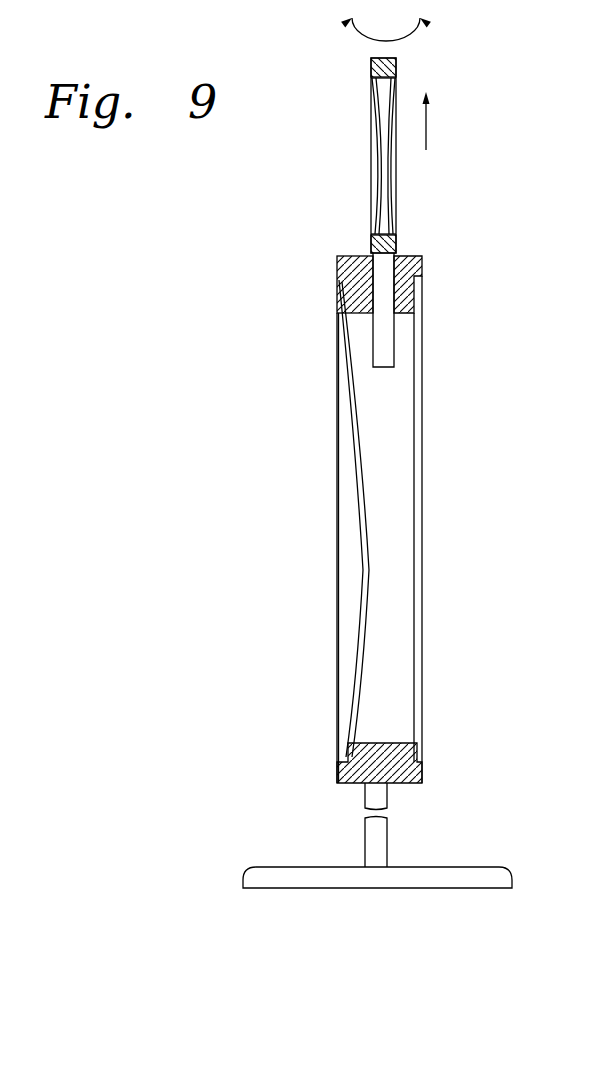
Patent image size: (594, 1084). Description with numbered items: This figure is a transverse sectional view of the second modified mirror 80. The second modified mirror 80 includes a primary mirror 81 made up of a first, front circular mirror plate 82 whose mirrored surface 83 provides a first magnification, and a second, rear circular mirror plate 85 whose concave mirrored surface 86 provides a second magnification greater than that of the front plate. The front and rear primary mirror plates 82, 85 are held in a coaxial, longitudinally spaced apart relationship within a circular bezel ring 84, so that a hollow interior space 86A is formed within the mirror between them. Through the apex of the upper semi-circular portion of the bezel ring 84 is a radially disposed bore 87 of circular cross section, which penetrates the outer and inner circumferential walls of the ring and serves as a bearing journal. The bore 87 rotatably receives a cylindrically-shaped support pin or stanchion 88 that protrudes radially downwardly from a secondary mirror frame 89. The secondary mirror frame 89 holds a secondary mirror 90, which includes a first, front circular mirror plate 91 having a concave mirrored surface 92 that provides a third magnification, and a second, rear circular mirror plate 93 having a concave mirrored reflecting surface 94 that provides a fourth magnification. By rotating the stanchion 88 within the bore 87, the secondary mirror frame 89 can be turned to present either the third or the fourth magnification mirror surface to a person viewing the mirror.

The second modified mirror 80 is at (460, 335).
The primary mirror 81 is at (430, 720).
The front circular mirror plate 82 is at (420, 675).
The mirrored surface 83 is at (424, 620).
The bezel ring 84 is at (345, 258).
The rear circular mirror plate 85 is at (340, 757).
The concave mirrored surface 86 is at (350, 665).
The hollow interior space 86A is at (408, 714).
The bore 87 is at (416, 262).
The stanchion 88 is at (373, 355).
The secondary mirror frame 89 is at (372, 72).
The secondary mirror 90 is at (398, 192).
The front circular mirror plate 91 is at (391, 148).
The concave mirrored surface 92 is at (397, 97).
The rear circular mirror plate 93 is at (321, 156).
The concave mirrored reflecting surface 94 is at (378, 175).